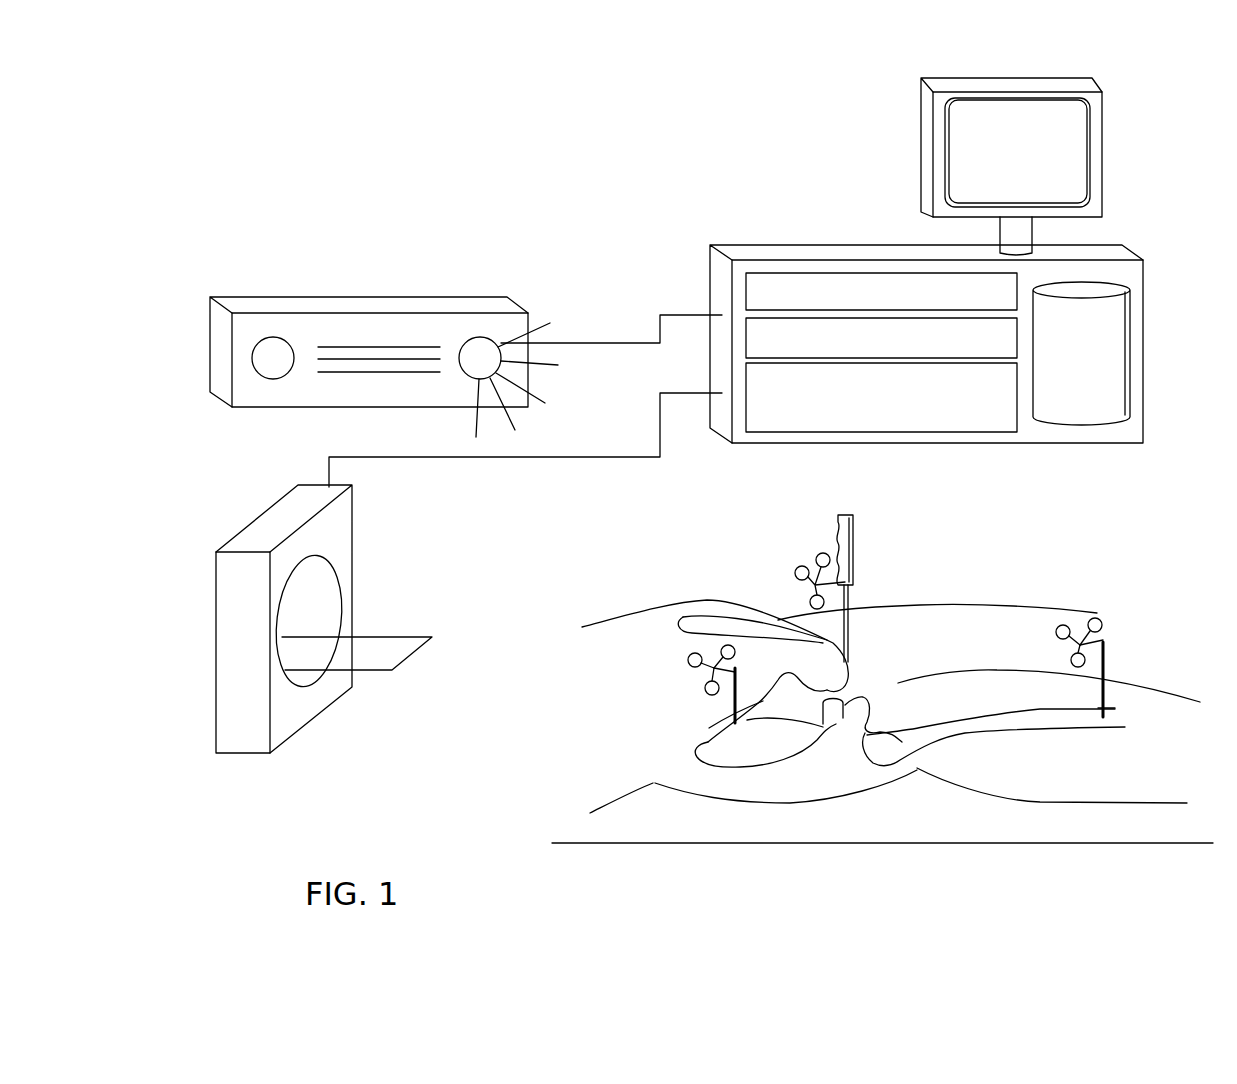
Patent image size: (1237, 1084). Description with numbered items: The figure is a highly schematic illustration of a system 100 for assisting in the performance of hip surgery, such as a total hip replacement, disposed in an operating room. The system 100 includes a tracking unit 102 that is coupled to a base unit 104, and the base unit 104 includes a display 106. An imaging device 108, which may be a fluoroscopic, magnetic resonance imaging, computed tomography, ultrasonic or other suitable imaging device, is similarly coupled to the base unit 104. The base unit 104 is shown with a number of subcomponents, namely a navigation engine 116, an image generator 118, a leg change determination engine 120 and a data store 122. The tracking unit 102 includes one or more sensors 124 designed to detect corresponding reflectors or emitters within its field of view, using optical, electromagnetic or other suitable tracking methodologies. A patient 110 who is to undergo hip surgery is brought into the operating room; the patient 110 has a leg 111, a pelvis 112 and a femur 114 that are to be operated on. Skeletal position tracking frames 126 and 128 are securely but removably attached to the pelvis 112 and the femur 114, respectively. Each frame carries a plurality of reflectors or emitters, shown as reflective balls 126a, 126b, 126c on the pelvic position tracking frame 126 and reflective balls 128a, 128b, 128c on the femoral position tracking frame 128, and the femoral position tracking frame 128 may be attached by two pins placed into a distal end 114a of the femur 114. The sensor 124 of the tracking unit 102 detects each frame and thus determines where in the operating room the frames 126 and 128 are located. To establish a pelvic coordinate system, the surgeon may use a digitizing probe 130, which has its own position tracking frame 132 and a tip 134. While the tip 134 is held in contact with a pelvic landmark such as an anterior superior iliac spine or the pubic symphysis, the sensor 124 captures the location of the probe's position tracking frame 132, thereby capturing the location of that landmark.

The system 100 is at (632, 186).
The tracking unit 102 is at (357, 300).
The base unit 104 is at (1145, 290).
The display 106 is at (1103, 138).
The imaging device 108 is at (216, 632).
The patient 110 is at (981, 601).
The leg 111 is at (1037, 801).
The pelvis 112 is at (755, 765).
The femur 114 is at (998, 735).
The distal end 114a is at (1093, 733).
The navigation engine 116 is at (789, 272).
The image generator 118 is at (745, 342).
The leg change determination engine 120 is at (815, 435).
The data store 122 is at (1130, 342).
The sensor 124 is at (476, 338).
The pelvic position tracking frame 126 is at (672, 692).
The reflective ball 126a is at (703, 690).
The reflective ball 126b is at (690, 658).
The reflective ball 126c is at (720, 648).
The femoral position tracking frame 128 is at (1080, 653).
The reflective ball 128a is at (1071, 660).
The reflective ball 128b is at (1056, 631).
The reflective ball 128c is at (1101, 621).
The digitizing probe 130 is at (842, 588).
The position tracking frame 132 is at (815, 568).
The tip 134 is at (850, 660).